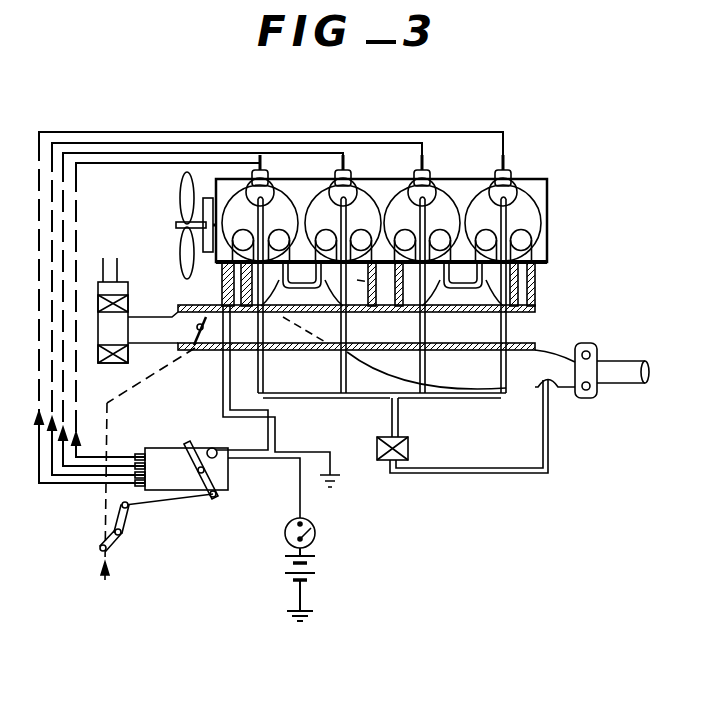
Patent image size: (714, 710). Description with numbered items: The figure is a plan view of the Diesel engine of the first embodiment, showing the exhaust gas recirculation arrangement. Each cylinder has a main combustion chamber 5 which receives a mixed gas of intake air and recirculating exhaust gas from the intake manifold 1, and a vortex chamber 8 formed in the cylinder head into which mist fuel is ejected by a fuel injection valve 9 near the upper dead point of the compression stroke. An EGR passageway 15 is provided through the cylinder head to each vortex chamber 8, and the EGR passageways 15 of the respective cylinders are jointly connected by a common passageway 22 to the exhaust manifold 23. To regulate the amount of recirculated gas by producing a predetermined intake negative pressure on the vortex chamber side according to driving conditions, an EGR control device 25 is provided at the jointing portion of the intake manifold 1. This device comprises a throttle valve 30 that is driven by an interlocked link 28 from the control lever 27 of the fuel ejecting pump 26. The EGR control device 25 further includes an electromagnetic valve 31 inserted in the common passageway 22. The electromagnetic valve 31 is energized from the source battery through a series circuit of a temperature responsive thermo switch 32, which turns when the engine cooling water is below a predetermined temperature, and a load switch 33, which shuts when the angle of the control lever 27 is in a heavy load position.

The intake manifold 1 is at (244, 332).
The main combustion chamber 5 is at (318, 188).
The vortex chamber 8 is at (362, 184).
The fuel injection valve 9 is at (513, 172).
The EGR passageway 15 is at (345, 372).
The common passageway 22 is at (500, 474).
The exhaust manifold 23 is at (550, 353).
The EGR control device 25 is at (199, 342).
The fuel ejecting pump 26 is at (218, 492).
The control lever 27 is at (228, 476).
The interlocked link 28 is at (128, 516).
The throttle valve 30 is at (190, 318).
The electromagnetic valve 31 is at (392, 462).
The thermo switch 32 is at (205, 256).
The load switch 33 is at (210, 450).